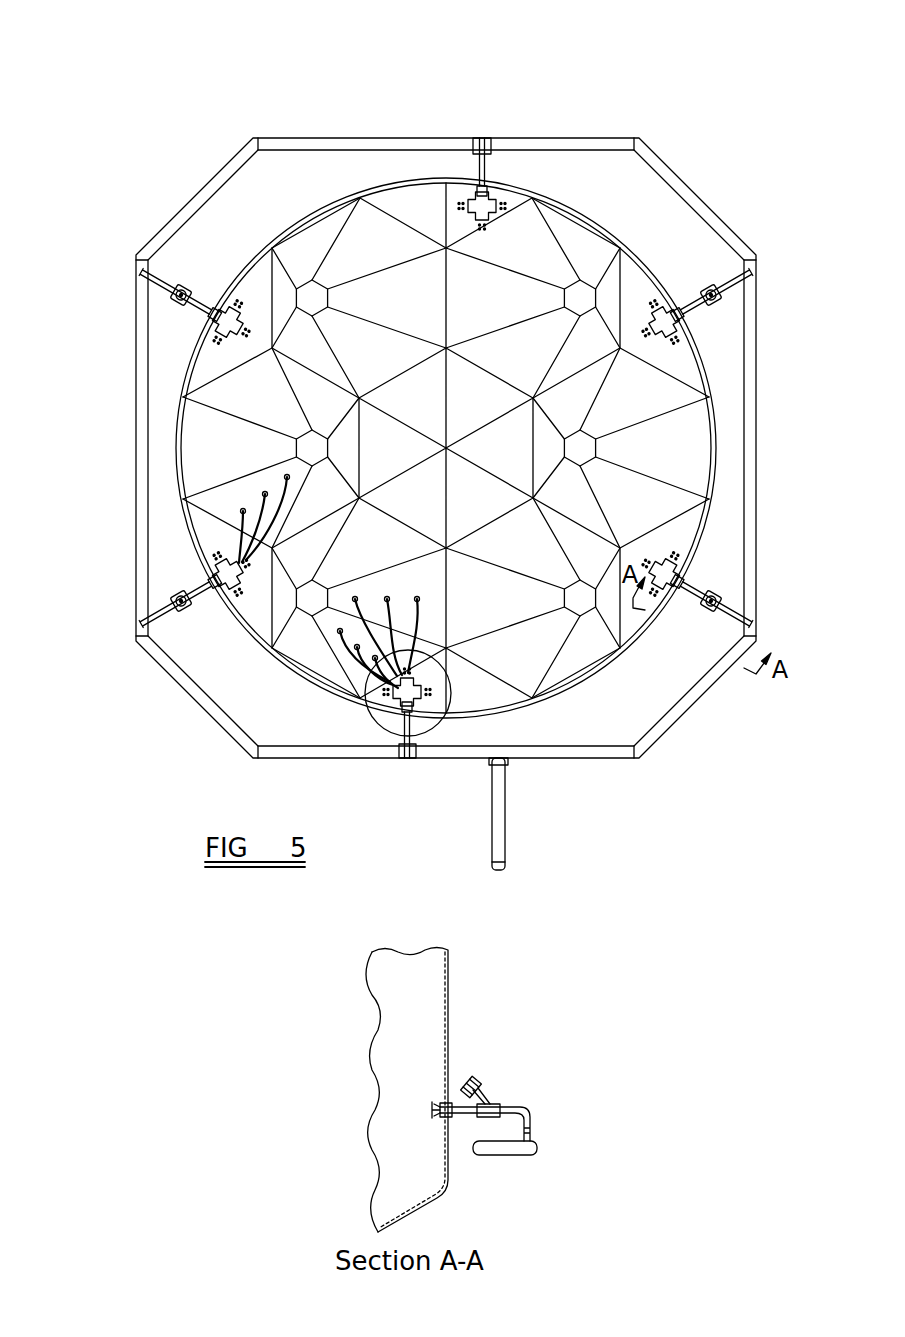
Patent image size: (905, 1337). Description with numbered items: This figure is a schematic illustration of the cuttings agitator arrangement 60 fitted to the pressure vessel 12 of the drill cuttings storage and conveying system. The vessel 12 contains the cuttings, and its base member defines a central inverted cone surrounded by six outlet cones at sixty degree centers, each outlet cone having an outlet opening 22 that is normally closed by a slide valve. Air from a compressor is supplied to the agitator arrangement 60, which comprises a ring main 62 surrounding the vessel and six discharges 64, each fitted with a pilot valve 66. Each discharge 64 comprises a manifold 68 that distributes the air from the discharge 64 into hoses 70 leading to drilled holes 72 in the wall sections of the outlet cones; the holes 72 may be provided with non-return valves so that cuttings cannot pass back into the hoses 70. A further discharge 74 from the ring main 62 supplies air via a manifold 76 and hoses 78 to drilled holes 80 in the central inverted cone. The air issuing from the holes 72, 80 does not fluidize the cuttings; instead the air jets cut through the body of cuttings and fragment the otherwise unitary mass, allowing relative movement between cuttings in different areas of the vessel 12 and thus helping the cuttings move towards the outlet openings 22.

The cuttings agitator arrangement 60 is at (115, 160).
The pressure vessel 12 is at (643, 266).
The outlet opening 22 is at (311, 287).
The ring main 62 is at (641, 758).
The discharge 64 is at (165, 290).
The pilot valve 66 is at (177, 311).
The manifold 68 is at (212, 578).
The hose 70 is at (238, 526).
The drilled hole 72 is at (255, 476).
The further discharge 74 is at (437, 730).
The manifold 76 is at (401, 715).
The hose 78 is at (377, 695).
The drilled hole 80 is at (338, 631).